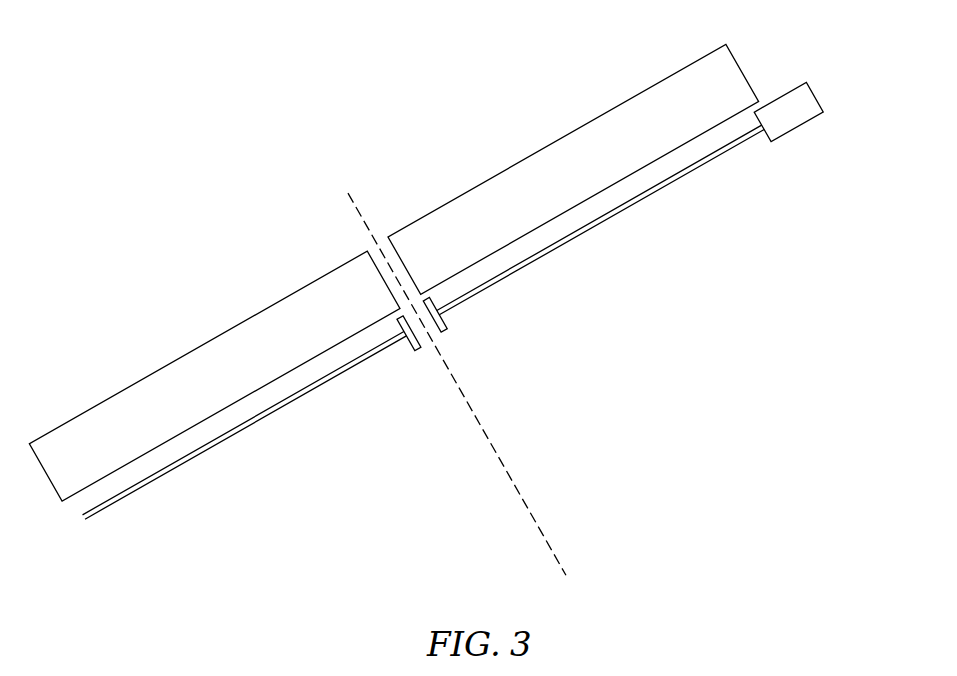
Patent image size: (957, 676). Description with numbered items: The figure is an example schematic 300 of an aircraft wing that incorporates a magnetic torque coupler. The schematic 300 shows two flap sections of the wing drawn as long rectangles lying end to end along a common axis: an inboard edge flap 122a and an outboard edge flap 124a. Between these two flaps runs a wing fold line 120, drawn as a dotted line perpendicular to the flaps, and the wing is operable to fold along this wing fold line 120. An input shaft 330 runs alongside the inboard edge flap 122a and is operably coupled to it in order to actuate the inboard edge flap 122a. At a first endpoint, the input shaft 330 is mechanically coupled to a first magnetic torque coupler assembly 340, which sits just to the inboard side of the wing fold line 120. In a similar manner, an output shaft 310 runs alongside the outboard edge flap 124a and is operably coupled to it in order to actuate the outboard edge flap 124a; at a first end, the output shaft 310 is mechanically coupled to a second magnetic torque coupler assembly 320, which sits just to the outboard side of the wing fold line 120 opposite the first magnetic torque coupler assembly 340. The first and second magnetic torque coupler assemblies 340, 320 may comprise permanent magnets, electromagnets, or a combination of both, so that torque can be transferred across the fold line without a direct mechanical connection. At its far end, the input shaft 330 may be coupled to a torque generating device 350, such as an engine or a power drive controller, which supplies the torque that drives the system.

The schematic 300 is at (179, 177).
The inboard edge flap 122a is at (573, 130).
The outboard edge flap 124a is at (137, 377).
The output shaft 310 is at (108, 518).
The input shaft 330 is at (652, 194).
The second magnetic torque coupler assembly 320 is at (424, 352).
The first magnetic torque coupler assembly 340 is at (447, 325).
The torque generating device 350 is at (815, 96).
The wing fold line 120 is at (545, 535).